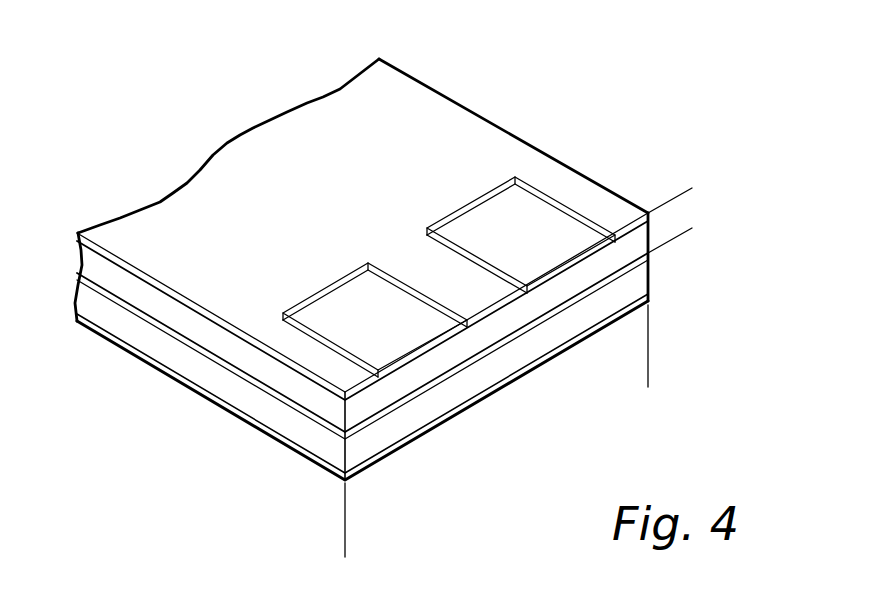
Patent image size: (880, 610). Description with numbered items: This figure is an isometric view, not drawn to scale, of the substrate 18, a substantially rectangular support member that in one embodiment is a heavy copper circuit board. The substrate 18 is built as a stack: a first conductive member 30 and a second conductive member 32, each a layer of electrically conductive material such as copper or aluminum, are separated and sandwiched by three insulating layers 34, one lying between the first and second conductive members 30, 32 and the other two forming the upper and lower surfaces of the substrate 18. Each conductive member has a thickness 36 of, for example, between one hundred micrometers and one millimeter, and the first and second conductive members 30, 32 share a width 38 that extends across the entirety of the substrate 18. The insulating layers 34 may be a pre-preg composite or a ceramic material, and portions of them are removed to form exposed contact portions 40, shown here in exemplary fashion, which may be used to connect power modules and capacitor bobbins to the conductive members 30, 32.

The substrate 18 is at (569, 126).
The first conductive member 30 is at (397, 385).
The second conductive member 32 is at (632, 287).
The insulating layers 34 is at (97, 252).
The thickness 36 is at (685, 256).
The width 38 is at (648, 374).
The exposed contact portions 40 is at (477, 233).